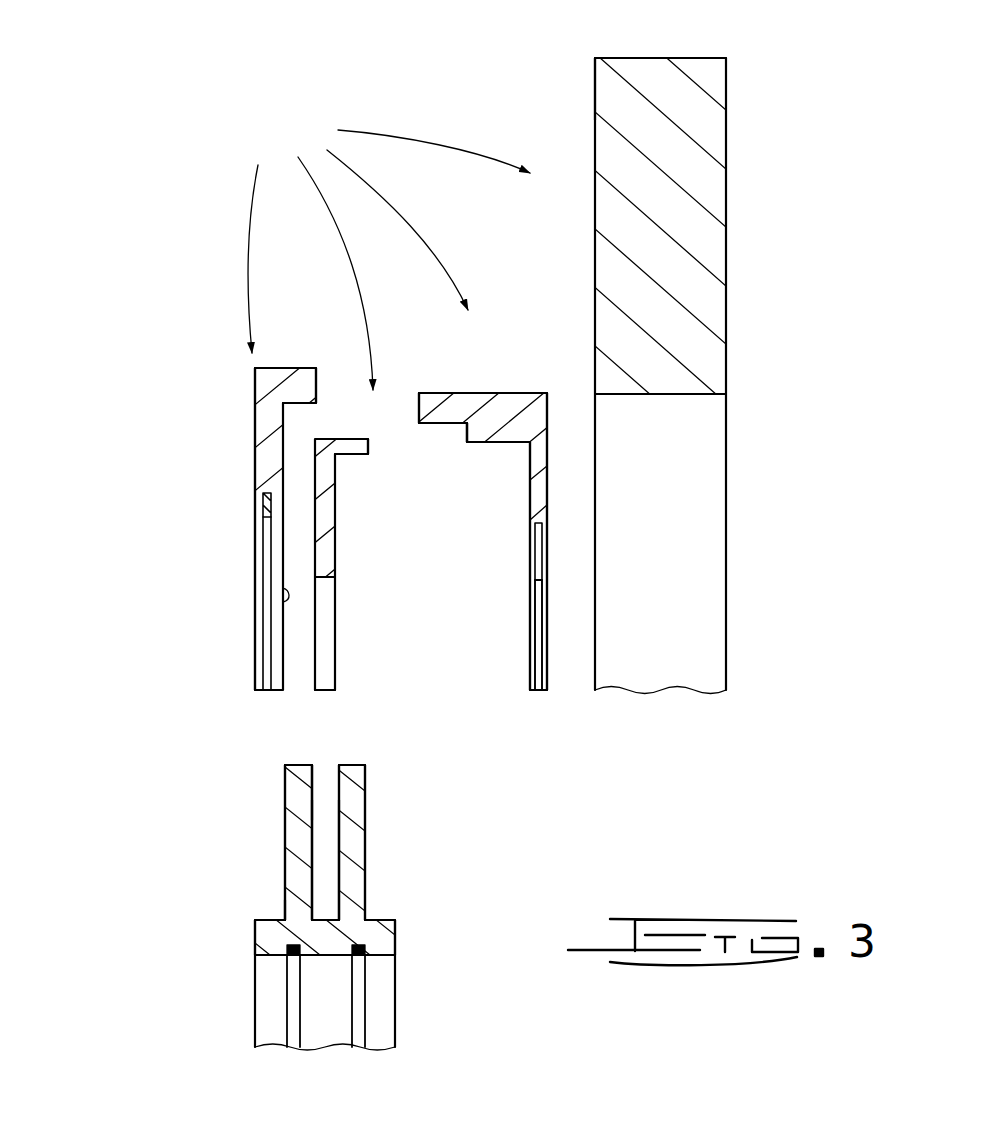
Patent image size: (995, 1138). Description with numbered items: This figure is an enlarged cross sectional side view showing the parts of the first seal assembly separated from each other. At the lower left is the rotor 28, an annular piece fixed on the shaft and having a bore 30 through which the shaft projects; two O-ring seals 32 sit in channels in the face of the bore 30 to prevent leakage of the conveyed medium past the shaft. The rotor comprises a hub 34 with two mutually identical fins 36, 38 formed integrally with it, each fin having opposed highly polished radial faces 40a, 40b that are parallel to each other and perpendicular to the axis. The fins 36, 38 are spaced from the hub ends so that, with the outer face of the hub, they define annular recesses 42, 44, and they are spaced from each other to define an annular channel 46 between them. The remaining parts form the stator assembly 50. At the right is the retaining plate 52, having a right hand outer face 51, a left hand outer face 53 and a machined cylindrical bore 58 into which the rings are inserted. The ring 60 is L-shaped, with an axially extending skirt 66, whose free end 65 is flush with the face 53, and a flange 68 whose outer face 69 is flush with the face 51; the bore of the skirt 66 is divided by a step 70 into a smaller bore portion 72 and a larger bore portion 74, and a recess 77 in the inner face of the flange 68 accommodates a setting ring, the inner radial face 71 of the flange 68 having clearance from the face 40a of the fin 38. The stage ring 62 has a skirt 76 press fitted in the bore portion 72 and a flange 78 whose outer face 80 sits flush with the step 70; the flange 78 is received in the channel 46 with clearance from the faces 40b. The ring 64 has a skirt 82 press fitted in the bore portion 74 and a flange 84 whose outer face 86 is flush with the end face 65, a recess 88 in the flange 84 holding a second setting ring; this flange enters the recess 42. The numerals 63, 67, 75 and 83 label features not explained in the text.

The rotor 28 is at (205, 866).
The bore 30 is at (334, 975).
The O-ring seals 32 is at (292, 953).
The hub 34 is at (258, 937).
The fin 36 is at (286, 820).
The fin 38 is at (366, 806).
The outer radial face 40a is at (286, 790).
The inner radial face 40b is at (316, 770).
The annular recess 42 is at (278, 910).
The annular recess 44 is at (380, 910).
The annular channel 46 is at (338, 852).
The stator assembly 50 is at (381, 242).
The right hand outer face 51 is at (727, 157).
The retaining plate 52 is at (713, 83).
The left hand outer face 53 is at (596, 62).
The cylindrical bore 58 is at (702, 394).
The ring 60 is at (518, 393).
The stage ring 62 is at (337, 554).
The gap 63 is at (330, 378).
The ring 64 is at (246, 388).
The free end of skirt 65 is at (419, 405).
The skirt 66 is at (480, 393).
The clip inner wall 67 is at (530, 500).
The flange 68 is at (533, 513).
The outer face of flange 69 is at (547, 395).
The step 70 is at (465, 440).
The inner radial face 71 is at (528, 603).
The bore portion 72 is at (497, 443).
The bore portion 74 is at (430, 424).
The second leg head 75 is at (367, 437).
The skirt 76 is at (368, 455).
The recess 77 is at (528, 556).
The flange 78 is at (337, 527).
The outer face of flange 80 is at (312, 607).
The skirt 82 is at (285, 367).
The bump 83 is at (290, 595).
The flange 84 is at (256, 430).
The outer face of flange 86 is at (256, 548).
The recess 88 is at (256, 505).